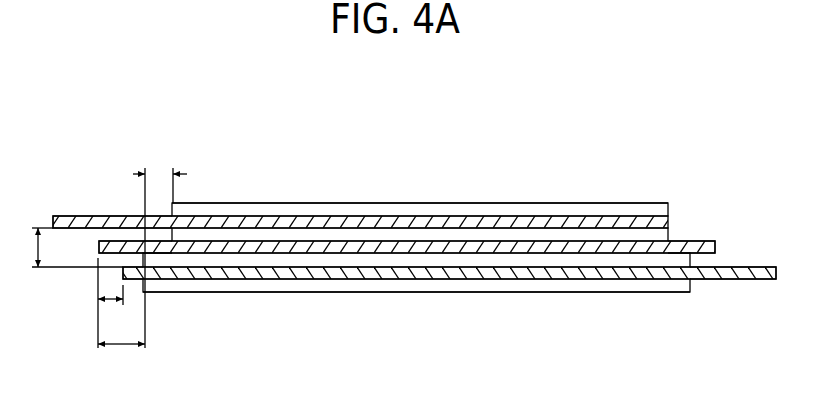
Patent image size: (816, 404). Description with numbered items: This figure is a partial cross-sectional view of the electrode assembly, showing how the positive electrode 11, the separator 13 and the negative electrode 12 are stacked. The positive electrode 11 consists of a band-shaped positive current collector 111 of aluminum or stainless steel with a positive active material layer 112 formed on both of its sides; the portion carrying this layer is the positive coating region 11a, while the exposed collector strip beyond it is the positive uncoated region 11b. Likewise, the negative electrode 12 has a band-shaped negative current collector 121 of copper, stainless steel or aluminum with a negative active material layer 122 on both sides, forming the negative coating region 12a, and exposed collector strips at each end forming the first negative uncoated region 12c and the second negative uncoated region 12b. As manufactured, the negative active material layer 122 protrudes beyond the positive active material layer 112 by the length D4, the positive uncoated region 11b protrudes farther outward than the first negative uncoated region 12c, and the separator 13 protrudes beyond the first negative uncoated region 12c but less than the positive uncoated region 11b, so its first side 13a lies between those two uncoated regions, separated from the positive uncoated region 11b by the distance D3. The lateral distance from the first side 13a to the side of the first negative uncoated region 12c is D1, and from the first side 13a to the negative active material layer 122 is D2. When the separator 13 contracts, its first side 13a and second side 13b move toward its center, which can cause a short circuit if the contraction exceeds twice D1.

The positive electrode 11 is at (357, 191).
The positive coating region 11a is at (469, 203).
The positive uncoated region 11b is at (58, 221).
The positive current collector 111 is at (520, 222).
The positive active material layer 112 is at (571, 208).
The negative electrode 12 is at (449, 309).
The negative coating region 12a is at (495, 293).
The second negative uncoated region 12b is at (738, 282).
The first negative uncoated region 12c is at (136, 280).
The negative current collector 121 is at (546, 267).
The negative active material layer 122 is at (598, 284).
The separator 13 is at (397, 235).
The first side of the separator 13a is at (99, 249).
The second side of the separator 13b is at (717, 248).
The lateral distance from separator first side to first negative uncoated region D1 is at (110, 303).
The lateral distance from separator first side to negative active material layer D2 is at (121, 358).
The distance between positive uncoated region and first negative uncoated region D3 is at (68, 247).
The protrusion length of negative active material layer D4 is at (160, 248).